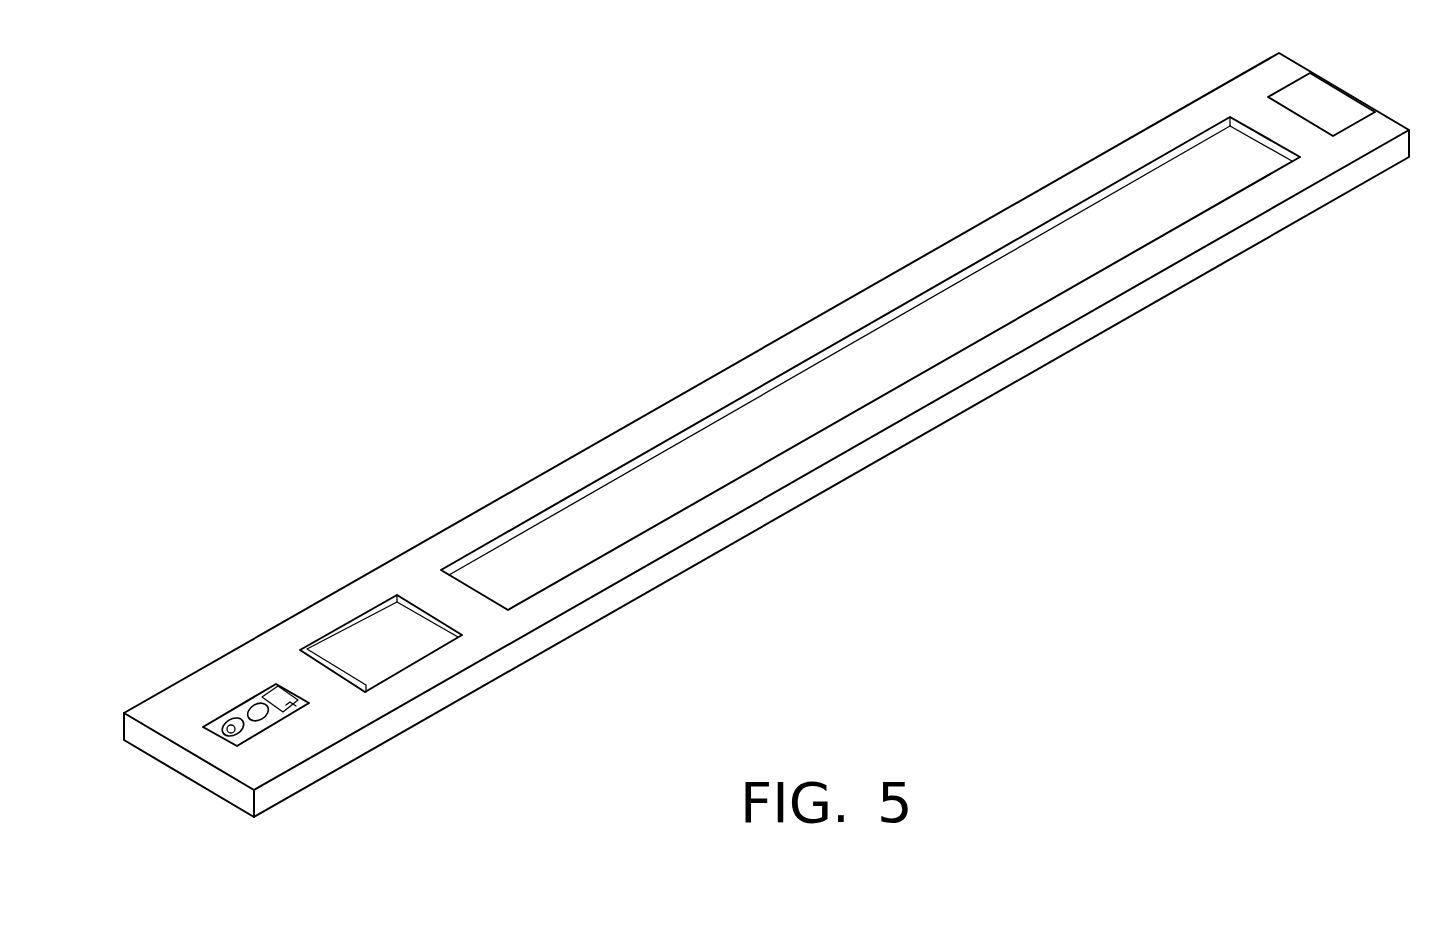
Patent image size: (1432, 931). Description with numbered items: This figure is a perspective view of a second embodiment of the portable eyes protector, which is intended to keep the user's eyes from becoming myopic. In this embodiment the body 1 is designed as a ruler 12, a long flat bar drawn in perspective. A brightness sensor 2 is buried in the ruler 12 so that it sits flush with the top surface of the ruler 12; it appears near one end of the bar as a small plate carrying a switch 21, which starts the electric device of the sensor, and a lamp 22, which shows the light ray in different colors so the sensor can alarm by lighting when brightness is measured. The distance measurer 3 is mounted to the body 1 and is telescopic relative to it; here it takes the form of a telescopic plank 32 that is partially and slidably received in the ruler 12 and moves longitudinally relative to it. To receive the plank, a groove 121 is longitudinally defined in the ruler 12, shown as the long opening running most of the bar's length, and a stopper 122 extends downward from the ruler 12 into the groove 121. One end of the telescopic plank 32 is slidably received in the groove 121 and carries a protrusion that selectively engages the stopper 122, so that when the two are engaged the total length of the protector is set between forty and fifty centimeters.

The body 1 is at (766, 435).
The ruler 12 is at (717, 542).
The groove 121 is at (690, 447).
The stopper 122 is at (1280, 127).
The brightness sensor 2 is at (271, 699).
The switch 21 is at (292, 700).
The lamp 22 is at (227, 728).
The distance measurer 3 is at (1191, 171).
The telescopic plank 32 is at (1328, 112).